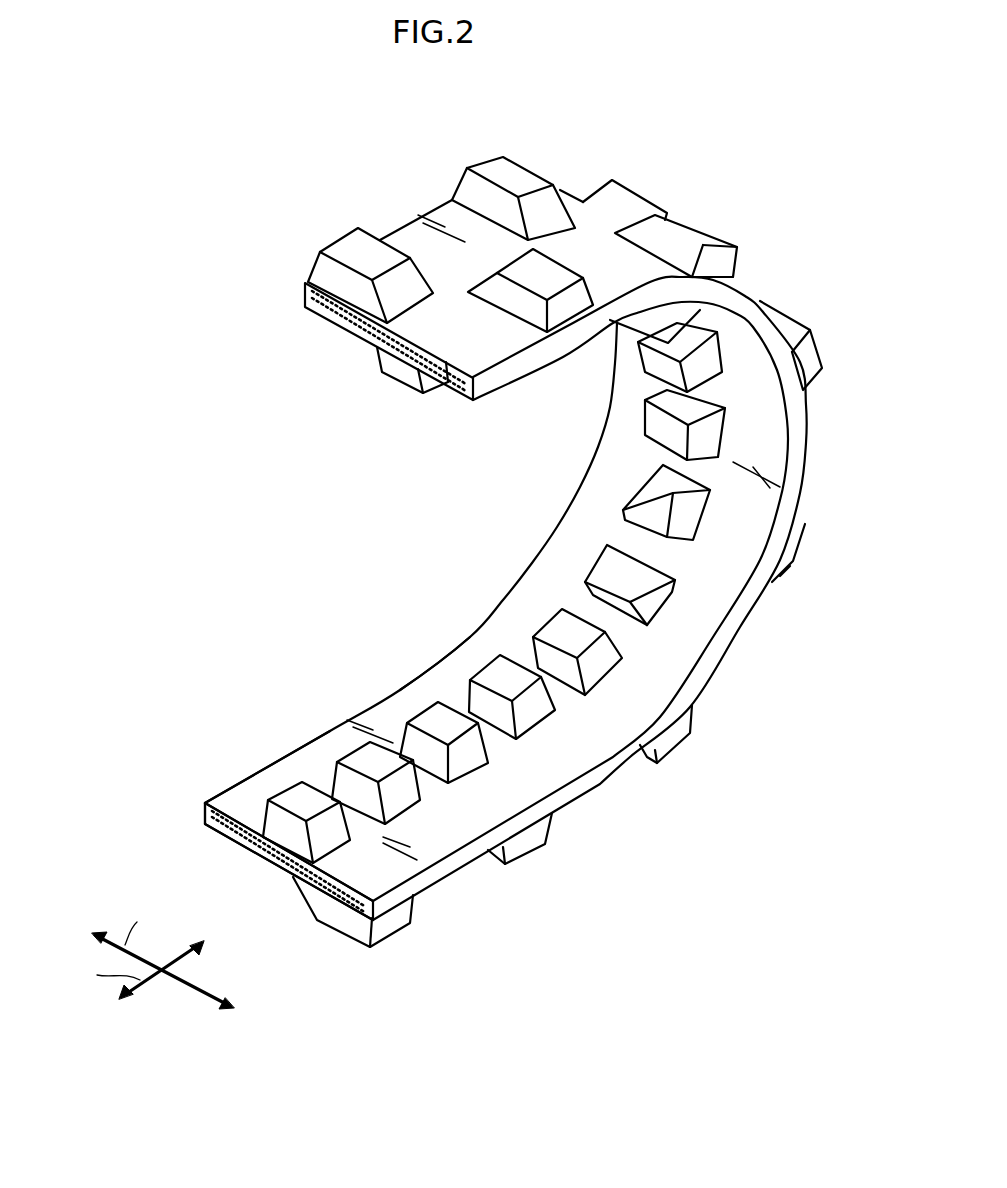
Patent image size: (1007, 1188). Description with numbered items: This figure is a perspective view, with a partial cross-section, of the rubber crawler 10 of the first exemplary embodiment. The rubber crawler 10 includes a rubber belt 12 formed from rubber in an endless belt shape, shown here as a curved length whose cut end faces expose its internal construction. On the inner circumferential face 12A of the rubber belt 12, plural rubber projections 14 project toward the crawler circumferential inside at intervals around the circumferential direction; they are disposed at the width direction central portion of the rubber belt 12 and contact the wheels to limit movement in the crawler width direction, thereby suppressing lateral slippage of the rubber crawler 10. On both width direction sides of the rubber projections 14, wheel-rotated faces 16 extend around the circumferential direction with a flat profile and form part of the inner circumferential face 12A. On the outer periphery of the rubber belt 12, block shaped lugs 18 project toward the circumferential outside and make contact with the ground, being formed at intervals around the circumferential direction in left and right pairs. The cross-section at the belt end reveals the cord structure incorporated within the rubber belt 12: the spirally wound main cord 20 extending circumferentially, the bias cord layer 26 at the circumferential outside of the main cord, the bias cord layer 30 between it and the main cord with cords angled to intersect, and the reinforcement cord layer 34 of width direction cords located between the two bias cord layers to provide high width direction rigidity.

The rubber crawler 10 is at (230, 193).
The rubber belt 12 is at (398, 222).
The inner circumferential face 12A is at (258, 802).
The rubber projections 14 is at (413, 723).
The wheel-rotated faces 16 is at (450, 690).
The lugs 18 is at (347, 230).
The main cord 20 is at (215, 810).
The bias cord layer 26 is at (205, 828).
The bias cord layer 30 is at (210, 812).
The reinforcement cord layer 34 is at (208, 822).